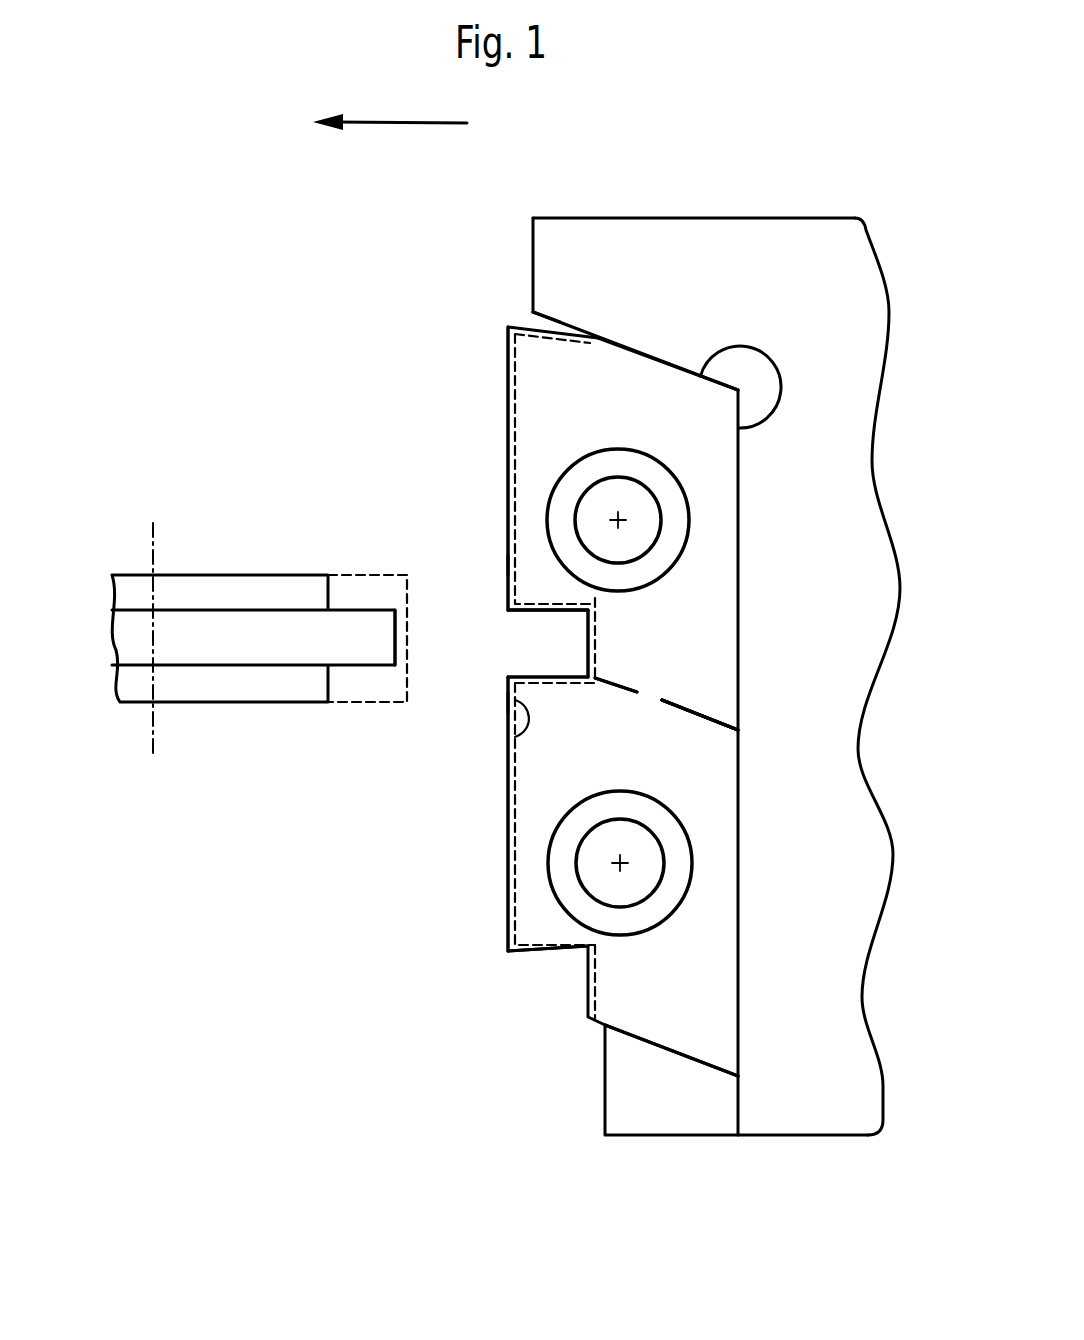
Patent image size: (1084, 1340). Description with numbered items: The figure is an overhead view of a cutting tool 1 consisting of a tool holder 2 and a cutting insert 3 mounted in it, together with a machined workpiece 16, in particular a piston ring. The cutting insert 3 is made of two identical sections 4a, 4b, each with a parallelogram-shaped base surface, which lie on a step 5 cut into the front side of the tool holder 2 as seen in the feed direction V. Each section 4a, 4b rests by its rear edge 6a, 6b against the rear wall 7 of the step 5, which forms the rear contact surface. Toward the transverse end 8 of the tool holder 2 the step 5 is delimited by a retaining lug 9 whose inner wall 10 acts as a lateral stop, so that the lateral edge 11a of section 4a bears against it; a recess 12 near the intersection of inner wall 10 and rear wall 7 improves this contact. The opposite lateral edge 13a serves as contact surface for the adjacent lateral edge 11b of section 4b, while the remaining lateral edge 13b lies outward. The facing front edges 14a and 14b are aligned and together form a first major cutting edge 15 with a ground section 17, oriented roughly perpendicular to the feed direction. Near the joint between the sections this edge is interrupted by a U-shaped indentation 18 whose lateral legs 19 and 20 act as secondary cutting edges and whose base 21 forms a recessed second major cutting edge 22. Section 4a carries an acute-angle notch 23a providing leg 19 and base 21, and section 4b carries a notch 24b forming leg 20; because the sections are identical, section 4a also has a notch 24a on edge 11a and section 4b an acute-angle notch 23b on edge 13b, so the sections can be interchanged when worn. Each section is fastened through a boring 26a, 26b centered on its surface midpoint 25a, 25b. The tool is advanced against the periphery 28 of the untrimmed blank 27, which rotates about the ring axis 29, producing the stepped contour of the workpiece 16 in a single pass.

The cutting tool 1 is at (684, 172).
The tool holder 2 is at (838, 611).
The cutting insert 3 is at (659, 712).
The section 4a is at (677, 423).
The section 4b is at (673, 976).
The step 5 is at (630, 1102).
The rear edge 6a is at (745, 504).
The rear edge 6b is at (750, 968).
The rear wall 7 is at (728, 1105).
The transverse end 8 is at (770, 218).
The retaining lug 9 is at (575, 247).
The inner wall 10 is at (554, 312).
The lateral edge 11a is at (631, 378).
The lateral edge 11b is at (699, 730).
The recess 12 is at (754, 388).
The lateral edge 13a is at (688, 700).
The lateral edge 13b is at (712, 1053).
The front edge 14a is at (508, 437).
The front edge 14b is at (508, 843).
The first major cutting edge 15 is at (500, 566).
The workpiece 16 is at (126, 575).
The ground section 17 is at (530, 722).
The indentation 18 is at (567, 638).
The lateral leg 19 is at (555, 603).
The lateral leg 20 is at (570, 679).
The base 21 is at (594, 648).
The second major cutting edge 22 is at (578, 629).
The acute-angle notch 23a is at (602, 613).
The acute-angle notch 23b is at (537, 962).
The notch 24a is at (518, 327).
The notch 24b is at (553, 675).
The surface midpoint 25a is at (616, 518).
The surface midpoint 25b is at (628, 858).
The boring 26a is at (618, 478).
The boring 26b is at (598, 830).
The untrimmed blank 27 is at (362, 575).
The periphery 28 is at (390, 638).
The ring axis 29 is at (153, 730).